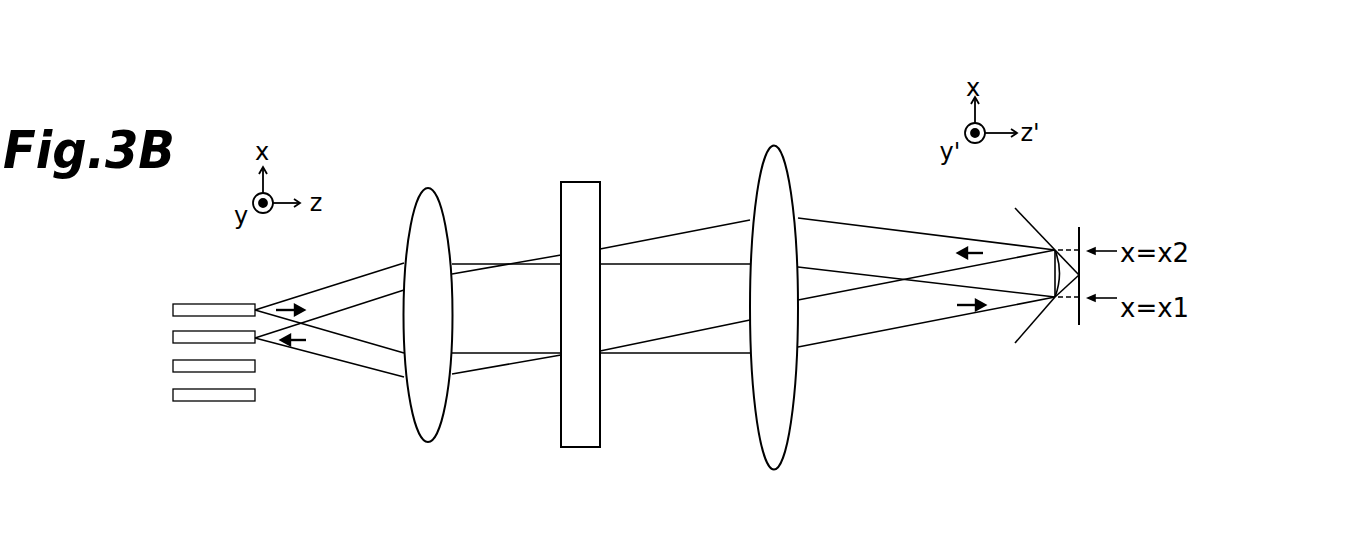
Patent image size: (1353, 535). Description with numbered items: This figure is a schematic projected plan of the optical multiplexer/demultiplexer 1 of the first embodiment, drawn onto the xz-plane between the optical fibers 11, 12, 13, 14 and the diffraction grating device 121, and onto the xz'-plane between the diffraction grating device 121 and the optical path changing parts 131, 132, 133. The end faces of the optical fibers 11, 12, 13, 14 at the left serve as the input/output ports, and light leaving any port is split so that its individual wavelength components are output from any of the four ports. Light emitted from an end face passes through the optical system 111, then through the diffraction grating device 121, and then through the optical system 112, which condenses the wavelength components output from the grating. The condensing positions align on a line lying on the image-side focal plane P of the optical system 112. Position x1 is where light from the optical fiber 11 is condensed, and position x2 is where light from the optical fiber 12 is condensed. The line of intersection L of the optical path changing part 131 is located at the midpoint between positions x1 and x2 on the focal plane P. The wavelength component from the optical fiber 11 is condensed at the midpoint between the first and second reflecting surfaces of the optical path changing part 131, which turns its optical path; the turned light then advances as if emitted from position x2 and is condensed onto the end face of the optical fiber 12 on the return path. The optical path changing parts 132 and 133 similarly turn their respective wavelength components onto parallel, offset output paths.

The optical multiplexer/demultiplexer 1 is at (887, 91).
The optical fiber 11 is at (173, 306).
The optical fiber 12 is at (173, 333).
The optical fiber 13 is at (173, 362).
The optical fiber 14 is at (173, 390).
The optical system 111 is at (428, 188).
The optical system 112 is at (774, 145).
The diffraction grating device 121 is at (588, 182).
The optical path changing part 131 is at (1015, 209).
The optical path changing part 132 is at (1152, 270).
The optical path changing part 133 is at (1152, 270).
The line of intersection L is at (1079, 276).
The image-side focal plane P is at (1080, 313).